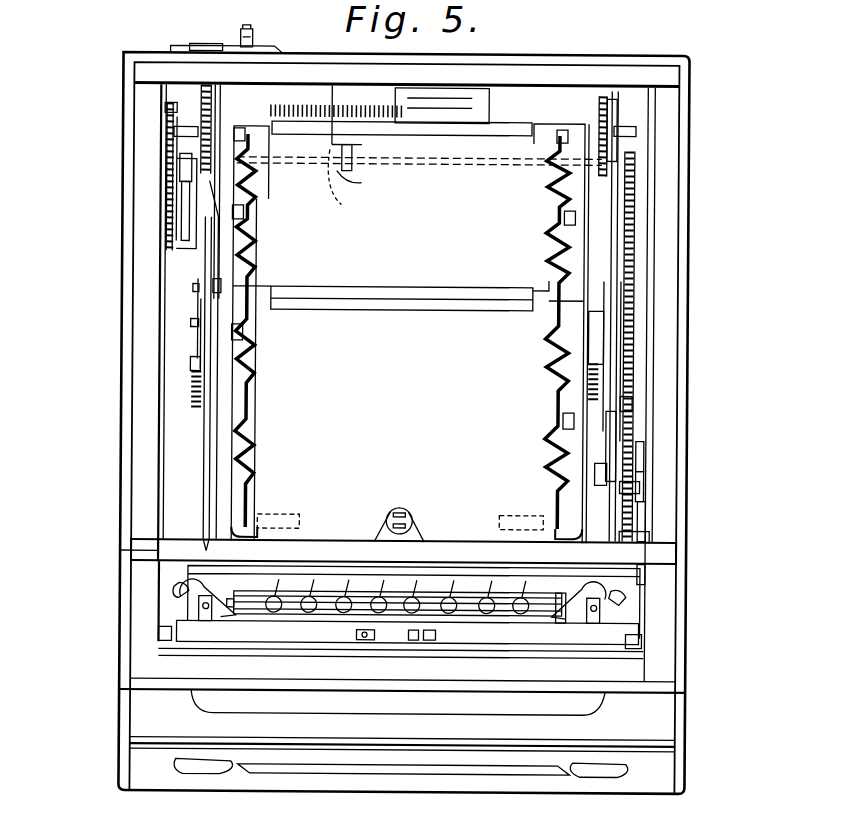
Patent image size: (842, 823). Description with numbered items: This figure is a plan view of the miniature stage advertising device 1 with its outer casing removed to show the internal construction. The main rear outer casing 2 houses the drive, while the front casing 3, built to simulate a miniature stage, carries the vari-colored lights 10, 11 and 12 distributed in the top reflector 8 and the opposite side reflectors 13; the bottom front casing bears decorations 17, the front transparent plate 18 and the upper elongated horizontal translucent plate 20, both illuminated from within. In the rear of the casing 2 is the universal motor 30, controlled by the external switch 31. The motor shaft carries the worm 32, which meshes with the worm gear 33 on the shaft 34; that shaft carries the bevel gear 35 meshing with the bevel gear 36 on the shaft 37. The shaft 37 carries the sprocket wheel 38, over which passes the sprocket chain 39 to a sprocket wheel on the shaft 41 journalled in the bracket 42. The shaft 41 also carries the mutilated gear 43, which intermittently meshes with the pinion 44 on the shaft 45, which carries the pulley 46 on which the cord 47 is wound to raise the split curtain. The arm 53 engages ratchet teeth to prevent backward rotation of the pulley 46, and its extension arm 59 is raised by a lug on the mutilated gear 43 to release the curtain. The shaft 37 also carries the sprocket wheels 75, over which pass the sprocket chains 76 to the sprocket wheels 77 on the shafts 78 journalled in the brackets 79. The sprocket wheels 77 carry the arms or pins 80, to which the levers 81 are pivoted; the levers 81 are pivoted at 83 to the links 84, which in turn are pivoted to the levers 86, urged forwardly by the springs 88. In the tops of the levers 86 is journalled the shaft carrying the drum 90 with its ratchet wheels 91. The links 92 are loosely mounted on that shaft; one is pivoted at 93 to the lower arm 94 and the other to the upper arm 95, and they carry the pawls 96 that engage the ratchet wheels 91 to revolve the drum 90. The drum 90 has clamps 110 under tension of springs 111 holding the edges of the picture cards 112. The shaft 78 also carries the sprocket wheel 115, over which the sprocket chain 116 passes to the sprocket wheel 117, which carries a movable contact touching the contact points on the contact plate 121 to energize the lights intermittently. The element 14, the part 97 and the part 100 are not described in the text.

The miniature stage advertising device 1 is at (403, 410).
The main rear outer casing 2 is at (120, 456).
The front casing 3 is at (640, 604).
The top reflector 8 is at (416, 635).
The vari-colored light 10 is at (176, 595).
The vari-colored light 11 is at (308, 612).
The vari-colored light 12 is at (278, 598).
The side reflector 13 is at (202, 585).
The base 14 is at (690, 730).
The decorations 17 is at (178, 767).
The front transparent plate 18 is at (555, 772).
The upper elongated horizontal translucent plate 20 is at (410, 713).
The universal motor 30 is at (455, 100).
The external switch 31 is at (244, 29).
The worm 32 is at (386, 104).
The worm gear 33 is at (402, 140).
The shaft 34 is at (330, 100).
The bevel gear 35 is at (341, 195).
The bevel gear 36 is at (352, 180).
The shaft 37 is at (468, 168).
The sprocket wheel 38 is at (633, 155).
The sprocket chain 39 is at (655, 255).
The shaft 41 is at (632, 430).
The bracket 42 is at (620, 440).
The mutilated gear 43 is at (443, 506).
The pinion 44 is at (645, 460).
The shaft 45 is at (645, 485).
The pulley 46 is at (645, 495).
The cord 47 is at (645, 535).
The arm 53 is at (655, 553).
The extension arm 59 is at (594, 472).
The sprocket wheel 75 is at (248, 175).
The sprocket chain 76 is at (210, 125).
The sprocket wheel 77 is at (200, 90).
The shaft 78 is at (175, 150).
The bracket 79 is at (164, 118).
The arm or pin 80 is at (212, 100).
The lever 81 is at (243, 213).
The pivot 83 is at (190, 325).
The link 84 is at (195, 312).
The lever 86 is at (190, 365).
The spring 88 is at (190, 392).
The drum 90 is at (402, 279).
The ratchet wheel 91 is at (243, 332).
The link 92 is at (215, 243).
The pivot 93 is at (550, 305).
The lower arm 94 is at (217, 258).
The upper arm 95 is at (583, 305).
The pawl 96 is at (225, 290).
The lever 97 is at (205, 340).
The pin 100 is at (190, 290).
The clamp 110 is at (254, 200).
The spring 111 is at (282, 508).
The picture card 112 is at (330, 331).
The sprocket wheel 115 is at (165, 108).
The sprocket chain 116 is at (168, 172).
The sprocket wheel 117 is at (168, 244).
The contact plate 121 is at (180, 198).